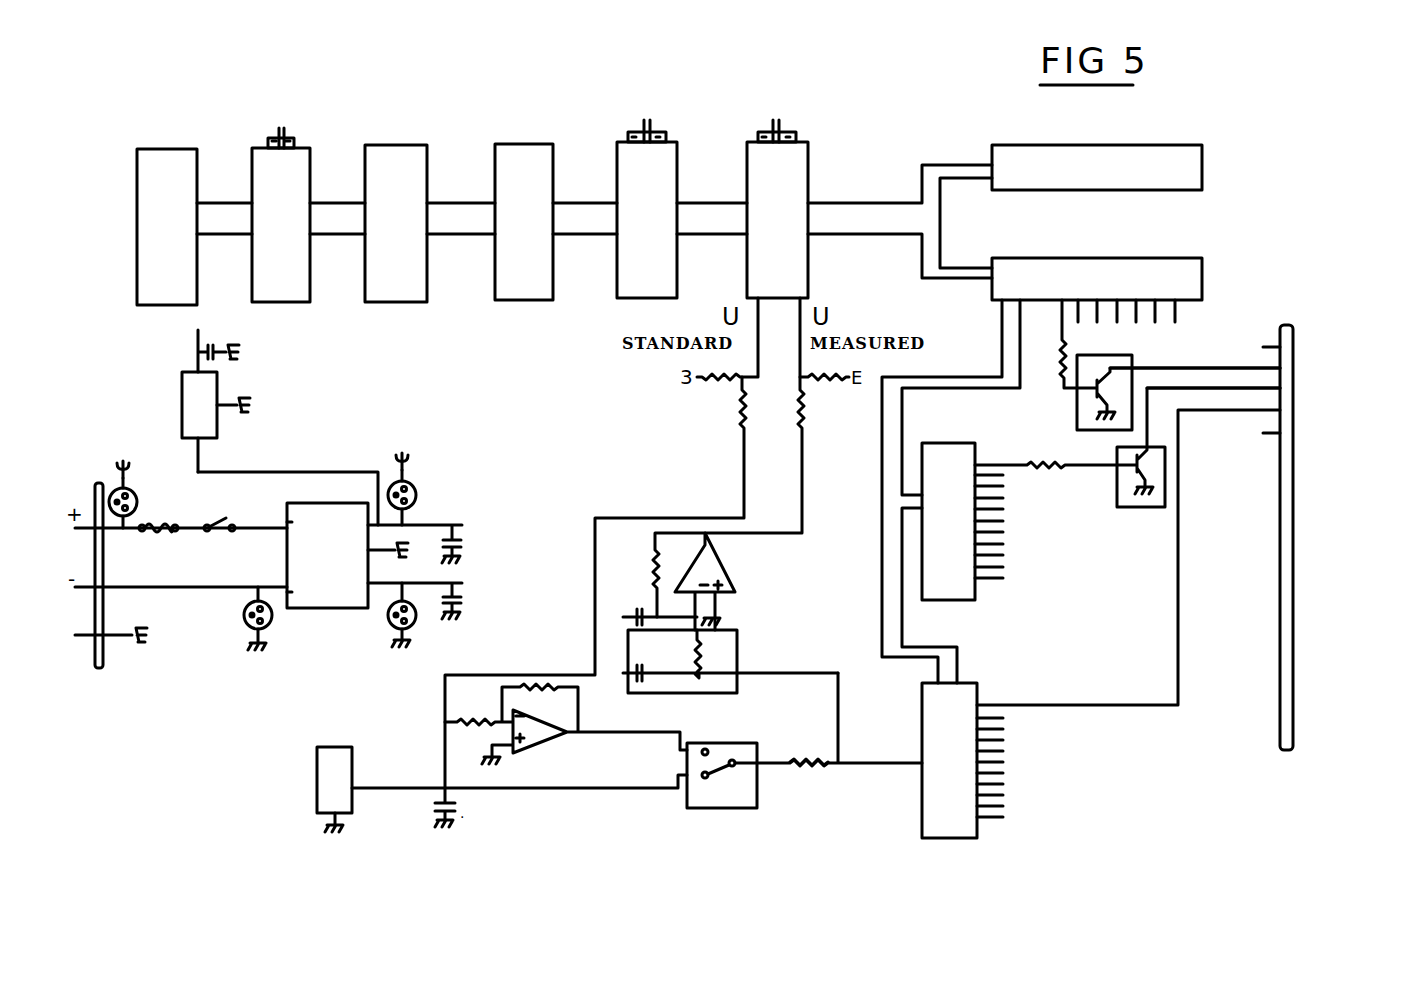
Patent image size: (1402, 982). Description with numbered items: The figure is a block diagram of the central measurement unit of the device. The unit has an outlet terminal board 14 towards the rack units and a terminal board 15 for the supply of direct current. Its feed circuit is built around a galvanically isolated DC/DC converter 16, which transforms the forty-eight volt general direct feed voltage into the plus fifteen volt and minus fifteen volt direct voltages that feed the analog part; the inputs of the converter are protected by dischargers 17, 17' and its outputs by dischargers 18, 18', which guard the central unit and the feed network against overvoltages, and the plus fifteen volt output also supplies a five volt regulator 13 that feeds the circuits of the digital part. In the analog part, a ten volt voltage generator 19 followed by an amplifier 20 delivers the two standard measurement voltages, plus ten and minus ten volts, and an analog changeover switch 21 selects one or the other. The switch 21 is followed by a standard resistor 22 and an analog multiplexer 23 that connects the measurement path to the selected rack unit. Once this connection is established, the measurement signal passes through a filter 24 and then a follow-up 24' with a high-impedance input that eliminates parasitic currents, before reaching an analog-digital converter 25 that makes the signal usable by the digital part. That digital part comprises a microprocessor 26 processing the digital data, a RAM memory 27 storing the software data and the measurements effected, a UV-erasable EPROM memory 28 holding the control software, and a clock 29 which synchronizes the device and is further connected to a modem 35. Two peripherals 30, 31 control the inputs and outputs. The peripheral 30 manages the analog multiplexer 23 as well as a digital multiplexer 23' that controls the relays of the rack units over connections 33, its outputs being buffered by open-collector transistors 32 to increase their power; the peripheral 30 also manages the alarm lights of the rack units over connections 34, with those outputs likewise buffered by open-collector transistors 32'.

The 5 V regulator 13 is at (182, 407).
The outlet terminal board 14 is at (1290, 468).
The terminal board 15 is at (92, 560).
The galvanically isolated DC/DC converter 16 is at (338, 520).
The discharger 17 is at (152, 494).
The discharger 17' is at (231, 624).
The discharger 18 is at (437, 483).
The discharger 18' is at (377, 630).
The 10 V voltage generator 19 is at (317, 765).
The amplifier 20 is at (537, 740).
The analog changeover switch 21 is at (730, 814).
The standard resistor 22 is at (802, 768).
The analog multiplexer 23 is at (940, 762).
The digital multiplexer 23' is at (997, 527).
The filter 24 is at (718, 649).
The follow-up 24' is at (750, 581).
The analog-digital converter 25 is at (758, 157).
The microprocessor 26 is at (630, 157).
The memory (RAM) 27 is at (505, 160).
The memory (EPROM) 28 is at (375, 163).
The clock 29 is at (253, 172).
The peripheral (PIA) 30 is at (1190, 287).
The peripheral (PIA) 31 is at (1190, 173).
The transistors 32 is at (1127, 464).
The transistors 32' is at (1148, 369).
The connections 33 is at (1240, 385).
The connections 34 is at (1222, 365).
The modem 35 is at (143, 177).